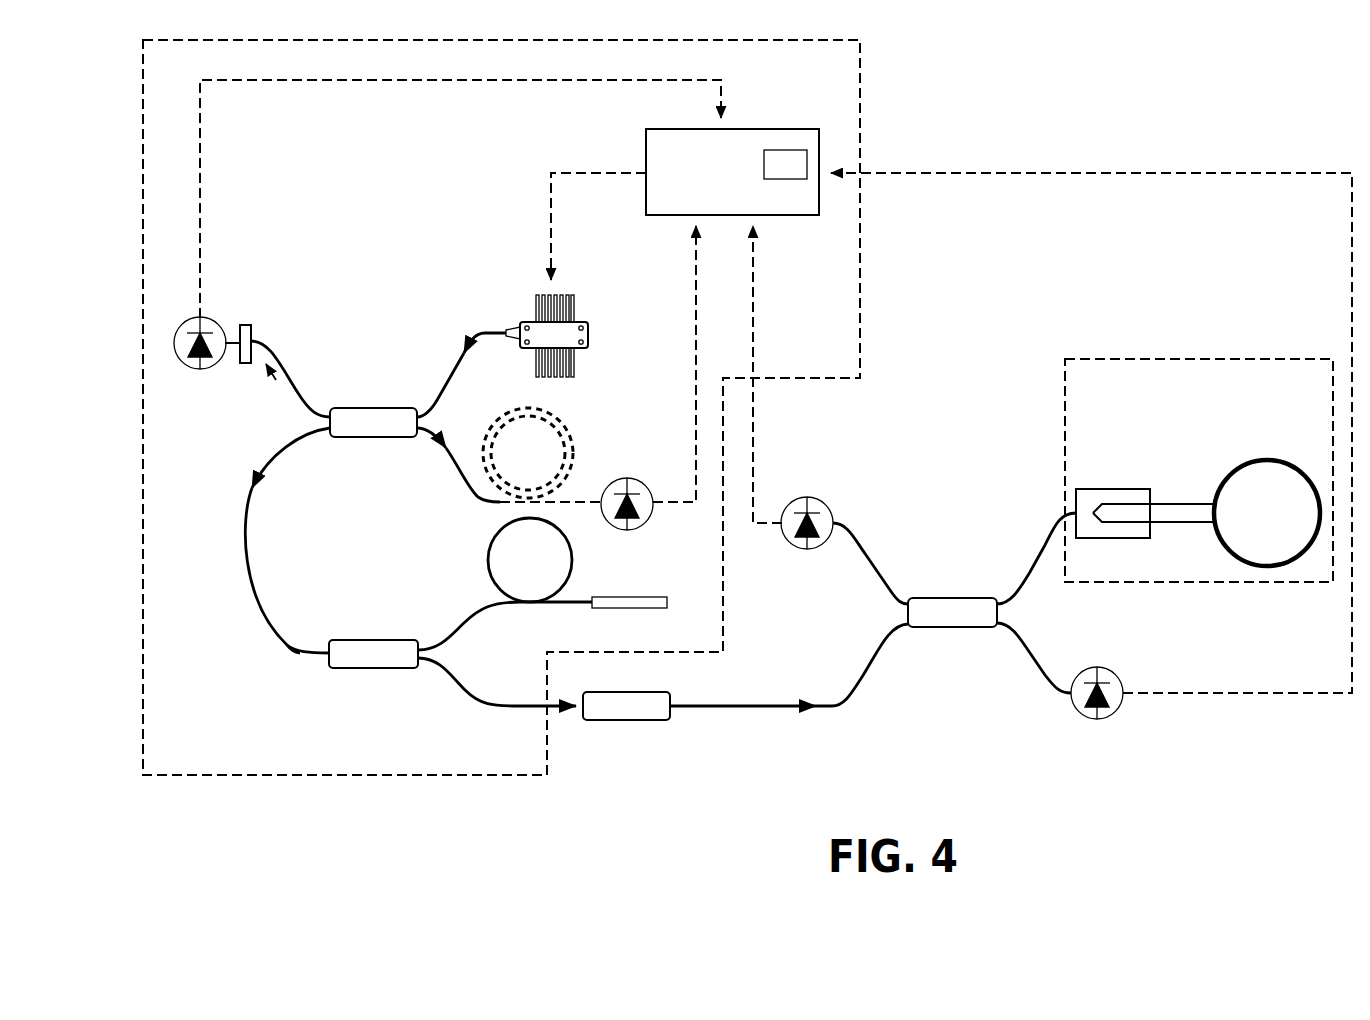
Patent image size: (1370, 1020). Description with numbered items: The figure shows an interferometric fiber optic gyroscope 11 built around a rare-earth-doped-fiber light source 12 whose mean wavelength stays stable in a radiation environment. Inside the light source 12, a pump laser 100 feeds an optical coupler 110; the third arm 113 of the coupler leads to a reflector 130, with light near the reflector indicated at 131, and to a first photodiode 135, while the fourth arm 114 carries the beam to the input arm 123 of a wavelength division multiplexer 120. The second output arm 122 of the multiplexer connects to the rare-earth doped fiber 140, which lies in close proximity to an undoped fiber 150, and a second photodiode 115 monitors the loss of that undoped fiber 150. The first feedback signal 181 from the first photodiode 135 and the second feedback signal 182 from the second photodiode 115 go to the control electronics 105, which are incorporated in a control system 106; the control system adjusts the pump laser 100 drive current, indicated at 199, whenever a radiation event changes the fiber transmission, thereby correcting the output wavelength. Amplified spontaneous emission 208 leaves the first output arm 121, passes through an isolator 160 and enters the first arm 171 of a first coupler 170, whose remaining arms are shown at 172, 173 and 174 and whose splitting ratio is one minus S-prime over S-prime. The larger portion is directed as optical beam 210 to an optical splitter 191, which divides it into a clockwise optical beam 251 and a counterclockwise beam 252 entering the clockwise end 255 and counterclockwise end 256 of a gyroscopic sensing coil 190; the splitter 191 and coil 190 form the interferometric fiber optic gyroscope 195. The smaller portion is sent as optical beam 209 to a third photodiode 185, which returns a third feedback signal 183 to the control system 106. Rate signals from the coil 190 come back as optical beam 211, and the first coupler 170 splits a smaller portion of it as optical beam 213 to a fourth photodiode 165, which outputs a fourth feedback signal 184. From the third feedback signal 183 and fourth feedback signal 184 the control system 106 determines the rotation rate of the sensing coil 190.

The interferometric fiber optic gyroscope 11 is at (672, 768).
The rare-earth-doped-fiber light source 12 is at (297, 777).
The pump laser 100 is at (588, 334).
The control electronics 105 is at (785, 164).
The control system 106 is at (750, 129).
The optical coupler 110 is at (370, 437).
The third-optical-fiber arm 113 is at (306, 390).
The fourth-optical-fiber arm 114 is at (290, 442).
The second photodiode 115 is at (651, 513).
The wavelength division multiplexer 120 is at (385, 640).
The first-output-optical-fiber arm 121 is at (450, 681).
The second-output-optical-fiber arm 122 is at (443, 634).
The input-optical-fiber arm 123 is at (287, 649).
The reflector 130 is at (253, 337).
The reflected light direction 131 is at (274, 382).
The first photodiode 135 is at (178, 331).
The rare-earth doped fiber 140 is at (487, 558).
The undoped fiber 150 is at (570, 441).
The isolator 160 is at (637, 720).
The fourth photodiode 165 is at (833, 512).
The first coupler 170 is at (942, 627).
The first arm 171 is at (872, 652).
The fiber to photodetector PD4 172 is at (873, 576).
The fiber to photodetector PD3 173 is at (1036, 662).
The fiber to sensing unit 174 is at (1060, 541).
The first feedback signal 181 is at (355, 97).
The second feedback signal 182 is at (681, 295).
The third feedback signal 183 is at (1308, 710).
The fourth feedback signal 184 is at (768, 318).
The third photodiode 185 is at (1120, 707).
The gyroscopic sensing coil 190 is at (1303, 470).
The optical splitter 191 is at (1082, 489).
The interferometric fiber optic gyroscope 195 is at (1160, 358).
The pump control signal 199 is at (536, 238).
The amplified spontaneous emission 208 is at (475, 679).
The optical beam 209 is at (1049, 650).
The optical beam 210 is at (1015, 542).
The optical beam 211 is at (1009, 580).
The optical beam 213 is at (872, 602).
The clockwise optical beam 251 is at (1167, 490).
The counterclockwise beam 252 is at (1180, 537).
The clockwise end 255 is at (1157, 500).
The counterclockwise end 256 is at (1165, 540).